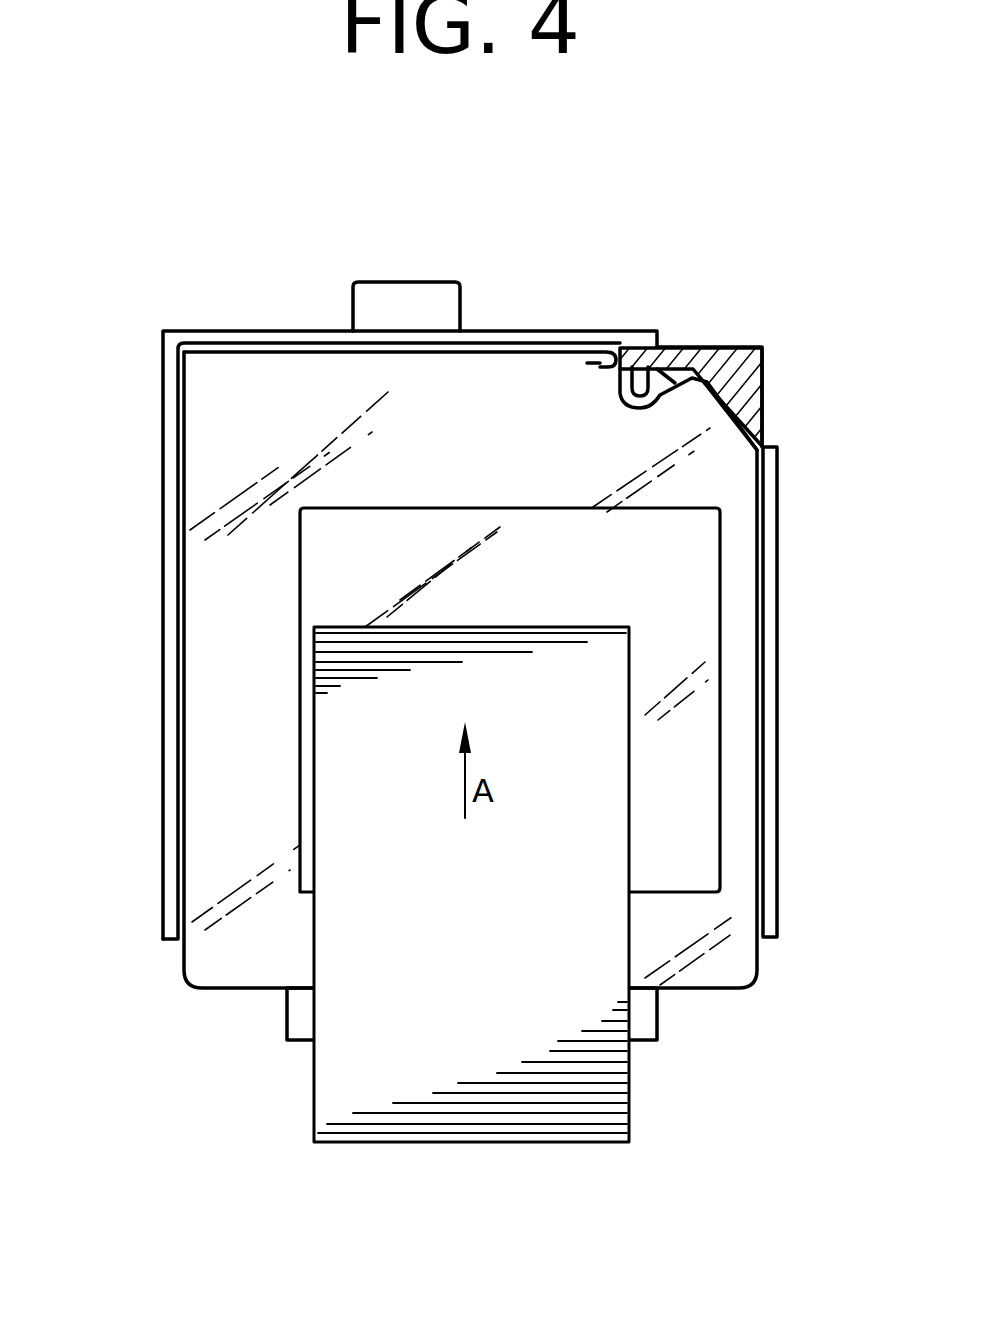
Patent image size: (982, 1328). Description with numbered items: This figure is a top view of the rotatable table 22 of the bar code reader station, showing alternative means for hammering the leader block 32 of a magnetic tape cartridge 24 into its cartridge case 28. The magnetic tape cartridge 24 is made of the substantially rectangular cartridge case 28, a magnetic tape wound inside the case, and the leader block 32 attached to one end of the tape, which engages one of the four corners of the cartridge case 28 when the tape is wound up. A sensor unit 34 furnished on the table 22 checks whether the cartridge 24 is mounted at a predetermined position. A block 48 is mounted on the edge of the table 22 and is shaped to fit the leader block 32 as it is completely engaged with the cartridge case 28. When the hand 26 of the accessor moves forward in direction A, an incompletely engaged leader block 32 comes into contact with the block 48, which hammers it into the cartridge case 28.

The table 22 is at (173, 423).
The magnetic tape cartridge 24 is at (222, 965).
The hand 26 is at (472, 1100).
The cartridge case 28 is at (730, 973).
The leader block 32 is at (678, 367).
The sensor unit 34 is at (409, 290).
The block 48 is at (755, 370).